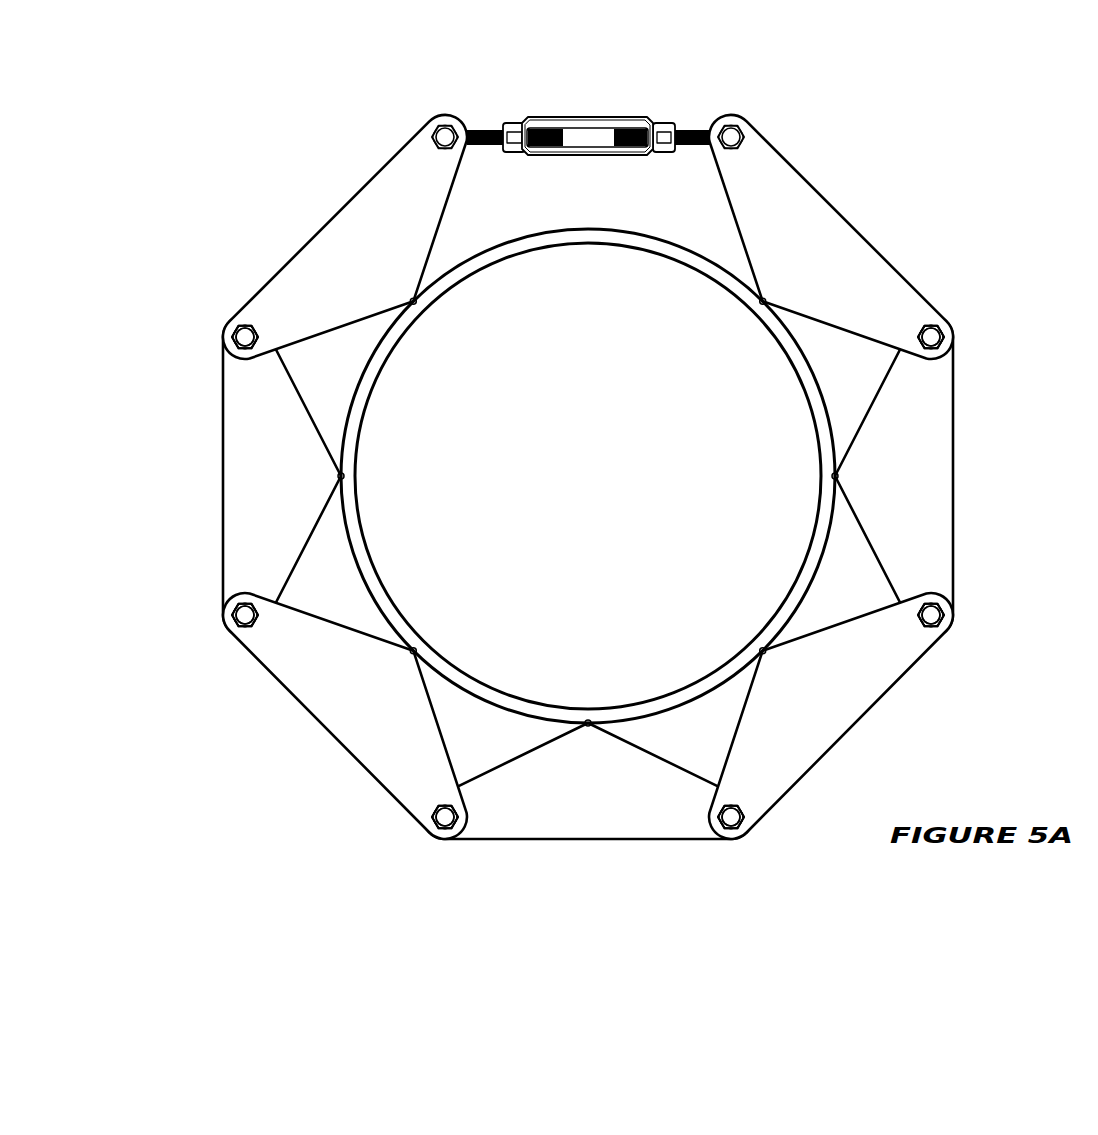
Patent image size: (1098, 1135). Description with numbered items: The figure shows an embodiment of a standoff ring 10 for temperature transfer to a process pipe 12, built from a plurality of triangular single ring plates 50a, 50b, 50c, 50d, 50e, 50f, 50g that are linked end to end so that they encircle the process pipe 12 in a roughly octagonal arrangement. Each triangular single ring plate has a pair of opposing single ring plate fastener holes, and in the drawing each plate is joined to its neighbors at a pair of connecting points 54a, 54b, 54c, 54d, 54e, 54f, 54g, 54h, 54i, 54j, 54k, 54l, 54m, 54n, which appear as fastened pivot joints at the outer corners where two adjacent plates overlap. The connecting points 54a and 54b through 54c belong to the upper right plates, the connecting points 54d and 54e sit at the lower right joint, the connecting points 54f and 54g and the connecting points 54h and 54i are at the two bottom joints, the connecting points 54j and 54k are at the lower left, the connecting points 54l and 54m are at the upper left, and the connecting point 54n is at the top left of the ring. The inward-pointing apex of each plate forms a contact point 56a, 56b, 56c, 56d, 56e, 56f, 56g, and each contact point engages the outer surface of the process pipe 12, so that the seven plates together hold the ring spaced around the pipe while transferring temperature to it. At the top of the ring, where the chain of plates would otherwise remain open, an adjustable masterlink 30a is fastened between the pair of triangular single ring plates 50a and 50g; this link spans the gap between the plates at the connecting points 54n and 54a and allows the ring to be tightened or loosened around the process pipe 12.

The standoff ring 10 is at (203, 135).
The process pipe 12 is at (377, 569).
The adjustable masterlink 30a is at (590, 117).
The triangular single ring plate 50a is at (824, 232).
The triangular single ring plate 50b is at (918, 462).
The triangular single ring plate 50c is at (821, 718).
The triangular single ring plate 50d is at (578, 808).
The triangular single ring plate 50e is at (355, 718).
The triangular single ring plate 50f is at (258, 462).
The triangular single ring plate 50g is at (352, 232).
The connecting point 54a is at (718, 110).
The connecting point 54b is at (952, 348).
The connecting point 54c is at (941, 313).
The connecting point 54d is at (941, 640).
The connecting point 54e is at (951, 604).
The connecting point 54f is at (721, 838).
The connecting point 54g is at (751, 828).
The connecting point 54h is at (425, 828).
The connecting point 54i is at (455, 838).
The connecting point 54j is at (225, 604).
The connecting point 54k is at (235, 640).
The connecting point 54l is at (235, 313).
The connecting point 54m is at (224, 348).
The connecting point 54n is at (458, 110).
The contact point 56a is at (763, 301).
The contact point 56b is at (834, 478).
The contact point 56c is at (765, 652).
The contact point 56d is at (588, 724).
The contact point 56e is at (411, 652).
The contact point 56f is at (342, 478).
The contact point 56g is at (413, 301).